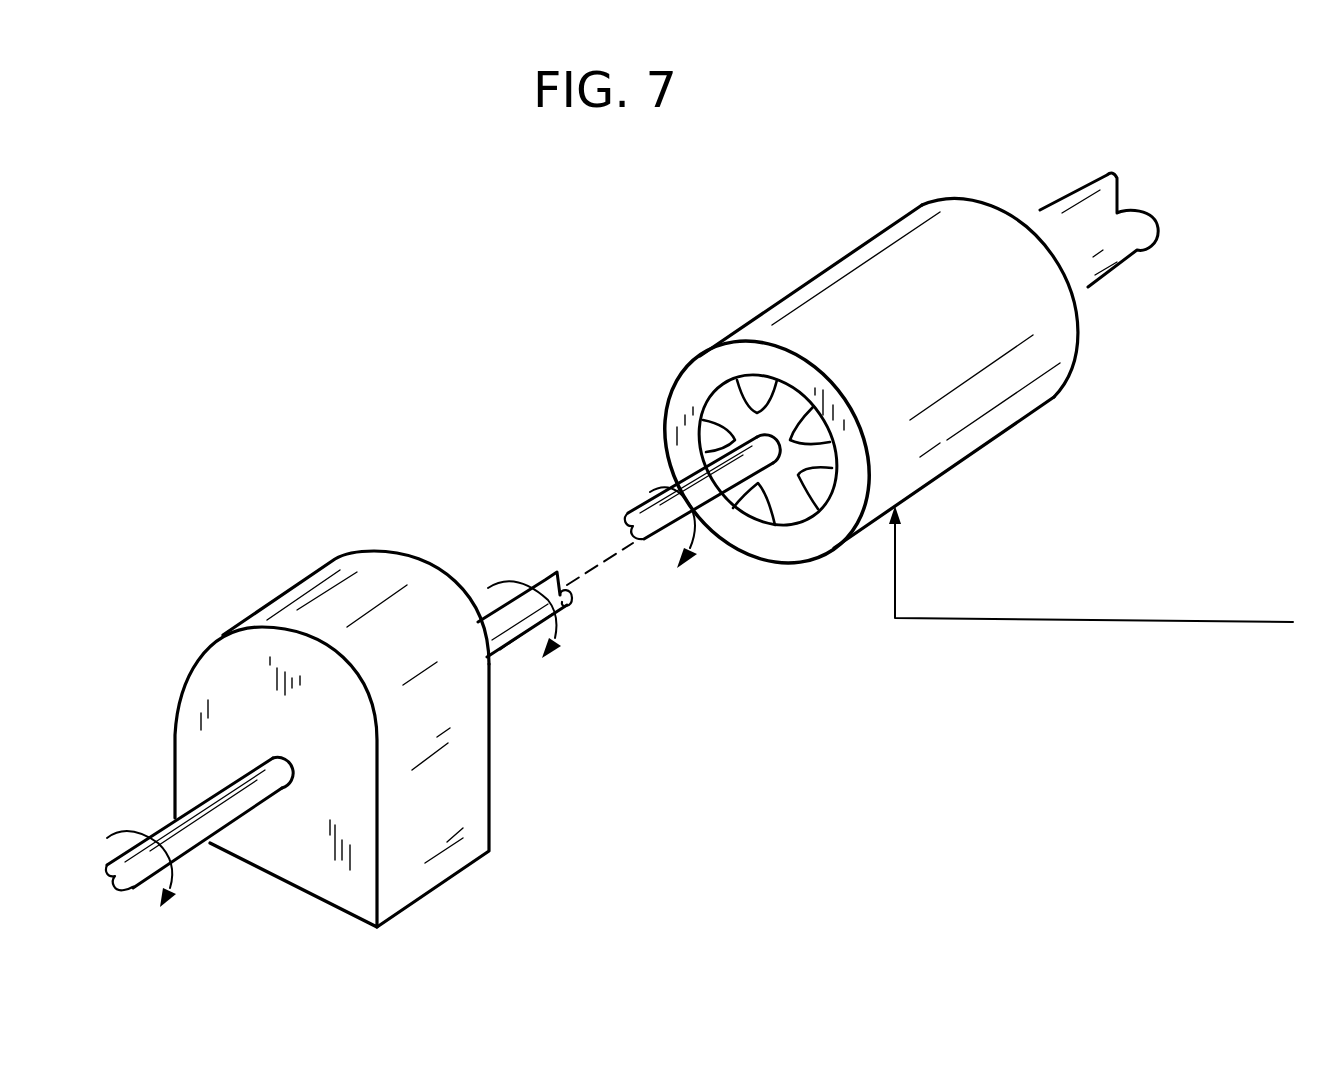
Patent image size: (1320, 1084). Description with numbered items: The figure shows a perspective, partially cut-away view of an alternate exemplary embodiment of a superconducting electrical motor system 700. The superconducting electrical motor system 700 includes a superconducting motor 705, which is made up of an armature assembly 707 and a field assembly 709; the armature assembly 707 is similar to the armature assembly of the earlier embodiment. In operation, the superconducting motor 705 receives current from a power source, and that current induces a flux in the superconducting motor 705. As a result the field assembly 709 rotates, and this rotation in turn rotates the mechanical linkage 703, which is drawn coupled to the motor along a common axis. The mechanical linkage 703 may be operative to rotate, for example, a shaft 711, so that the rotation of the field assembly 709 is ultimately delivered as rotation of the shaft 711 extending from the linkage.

The superconducting electrical motor system 700 is at (449, 426).
The mechanical linkage 703 is at (425, 812).
The superconducting motor 705 is at (637, 340).
The armature assembly 707 is at (980, 398).
The field assembly 709 is at (788, 512).
The shaft 711 is at (218, 810).